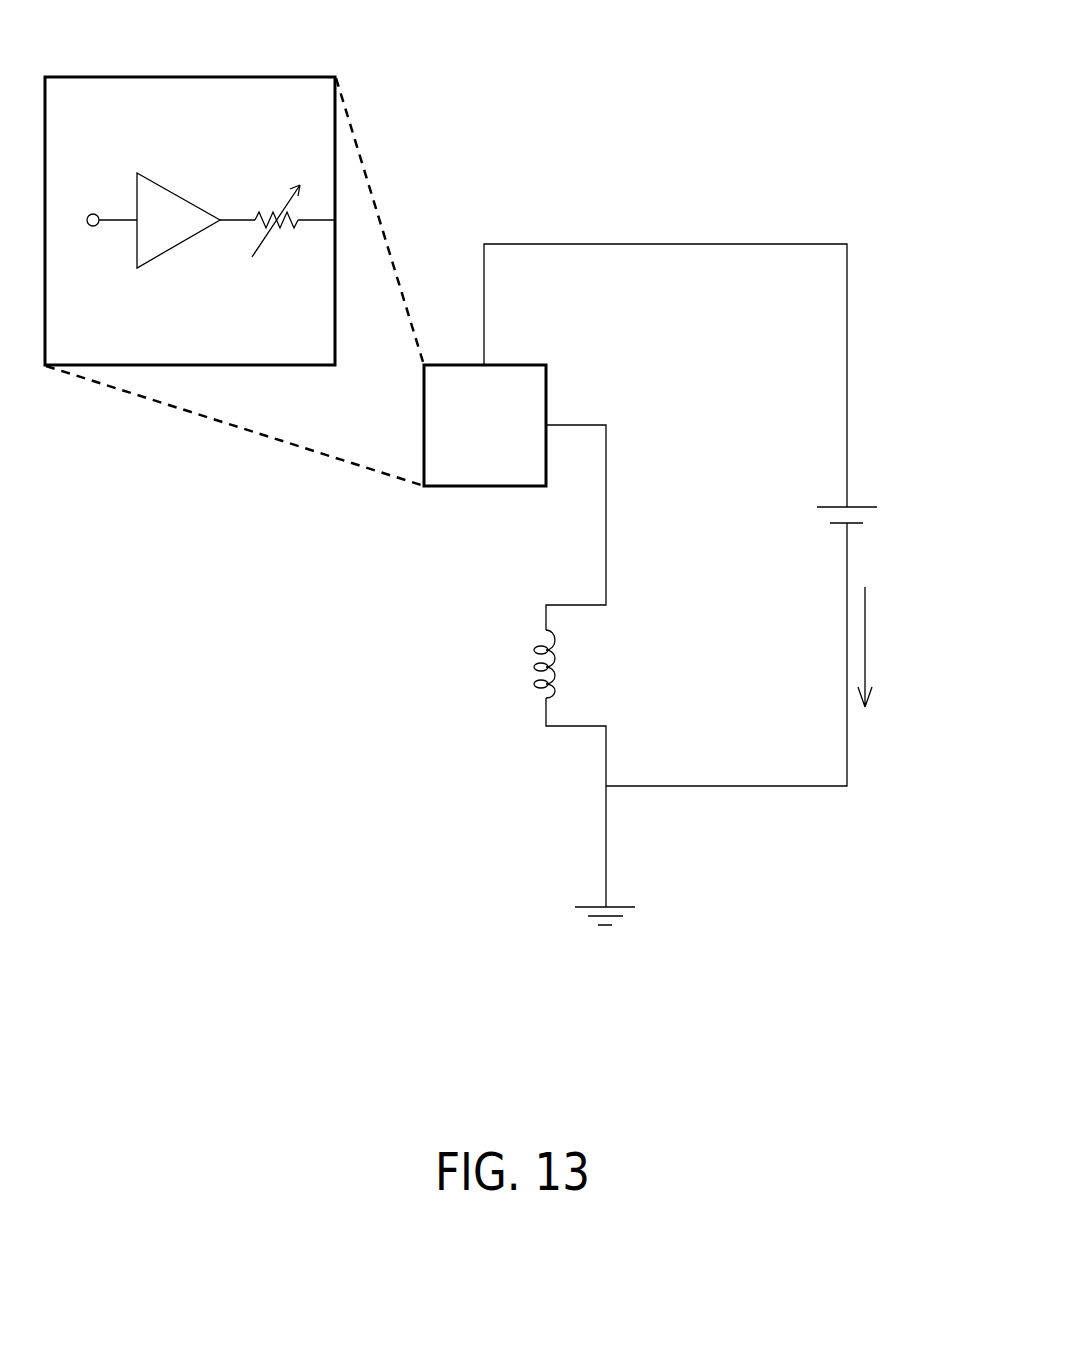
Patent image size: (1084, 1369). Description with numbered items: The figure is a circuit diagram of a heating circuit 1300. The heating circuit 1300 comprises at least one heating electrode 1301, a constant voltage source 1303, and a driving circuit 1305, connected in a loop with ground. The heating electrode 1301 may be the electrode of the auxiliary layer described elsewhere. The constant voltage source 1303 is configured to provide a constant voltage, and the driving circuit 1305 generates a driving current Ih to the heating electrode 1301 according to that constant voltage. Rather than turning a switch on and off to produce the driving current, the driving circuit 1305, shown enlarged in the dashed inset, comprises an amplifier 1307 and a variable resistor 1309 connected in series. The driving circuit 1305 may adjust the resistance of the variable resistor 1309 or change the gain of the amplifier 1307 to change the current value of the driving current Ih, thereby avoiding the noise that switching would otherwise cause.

The heating circuit 1300 is at (703, 141).
The heating electrode 1301 is at (540, 681).
The constant voltage source 1303 is at (866, 503).
The driving circuit 1305 is at (424, 421).
The amplifier 1307 is at (178, 193).
The variable resistor 1309 is at (286, 232).